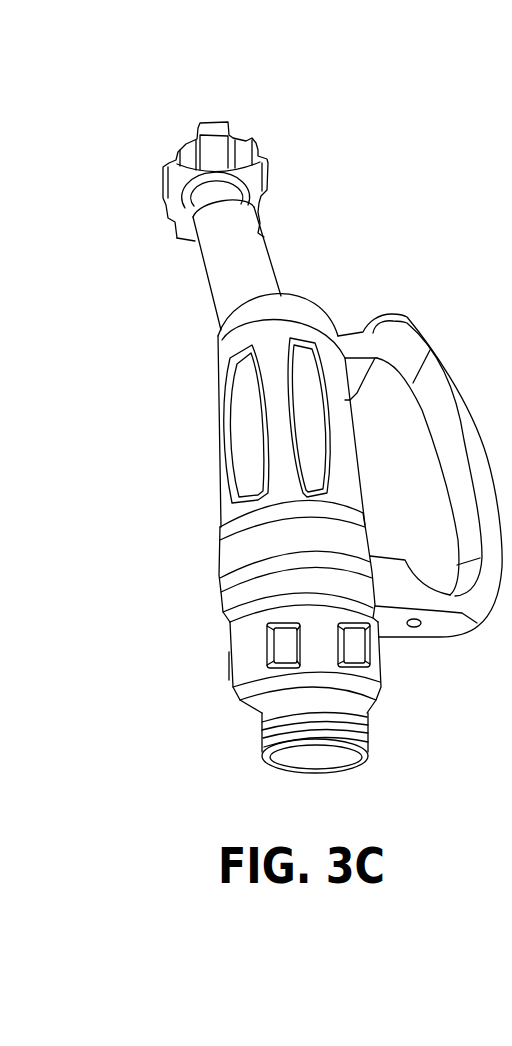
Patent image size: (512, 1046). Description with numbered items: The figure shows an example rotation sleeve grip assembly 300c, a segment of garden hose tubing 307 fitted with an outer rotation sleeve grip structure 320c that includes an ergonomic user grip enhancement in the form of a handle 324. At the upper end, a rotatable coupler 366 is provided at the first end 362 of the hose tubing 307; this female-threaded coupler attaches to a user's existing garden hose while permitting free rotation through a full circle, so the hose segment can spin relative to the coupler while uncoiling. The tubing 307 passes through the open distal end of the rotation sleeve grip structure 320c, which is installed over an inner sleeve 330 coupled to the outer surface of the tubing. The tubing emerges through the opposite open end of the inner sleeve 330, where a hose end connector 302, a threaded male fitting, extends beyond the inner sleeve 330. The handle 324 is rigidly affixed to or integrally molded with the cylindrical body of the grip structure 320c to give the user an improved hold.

The rotation sleeve grip assembly 300c is at (141, 76).
The rotatable coupler 366 is at (257, 150).
The first end 362 is at (247, 198).
The garden hose tubing 307 is at (208, 260).
The rotation sleeve grip structure 320c is at (218, 440).
The handle 324 is at (398, 316).
The inner sleeve 330 is at (232, 680).
The hose end connector 302 is at (262, 733).